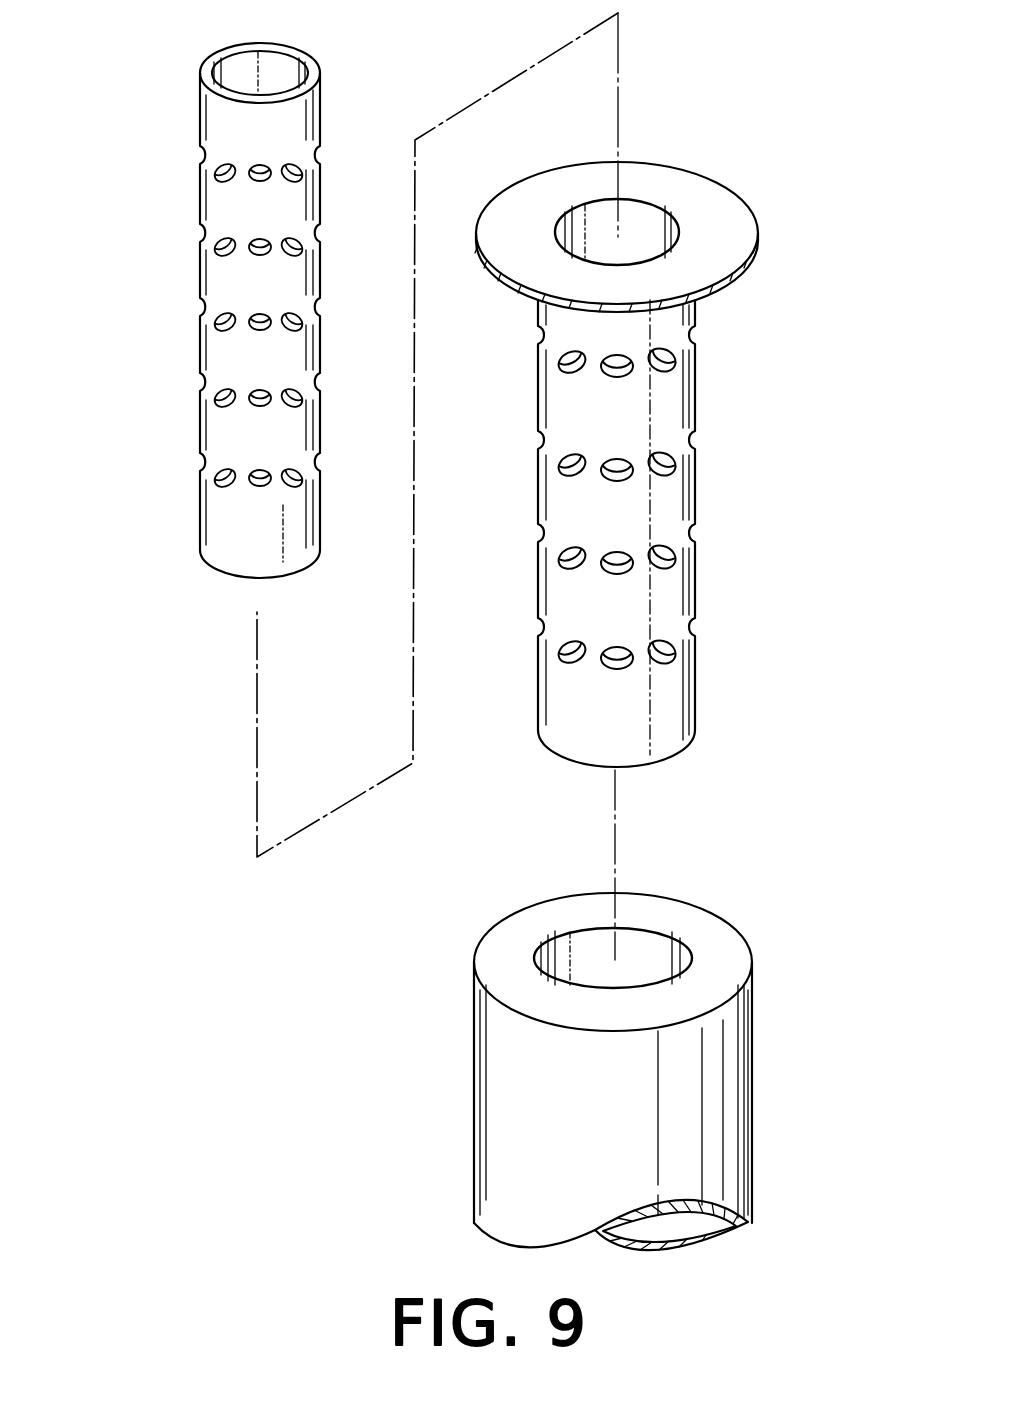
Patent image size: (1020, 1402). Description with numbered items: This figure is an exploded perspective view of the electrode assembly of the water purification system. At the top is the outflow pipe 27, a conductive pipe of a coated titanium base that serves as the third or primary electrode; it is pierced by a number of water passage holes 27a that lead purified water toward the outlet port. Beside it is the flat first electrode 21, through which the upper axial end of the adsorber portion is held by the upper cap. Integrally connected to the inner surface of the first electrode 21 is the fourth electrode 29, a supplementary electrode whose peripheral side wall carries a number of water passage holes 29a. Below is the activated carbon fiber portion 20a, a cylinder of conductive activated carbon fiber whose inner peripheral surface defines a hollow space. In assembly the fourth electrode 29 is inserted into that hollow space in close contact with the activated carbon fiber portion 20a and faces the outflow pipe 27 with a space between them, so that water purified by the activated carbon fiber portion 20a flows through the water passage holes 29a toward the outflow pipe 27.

The outflow pipe 27 is at (247, 310).
The water passage holes 27a is at (216, 320).
The first electrode 21 is at (693, 190).
The fourth electrode 29 is at (672, 533).
The water passage holes 29a is at (663, 558).
The activated carbon fiber portion 20a is at (707, 908).